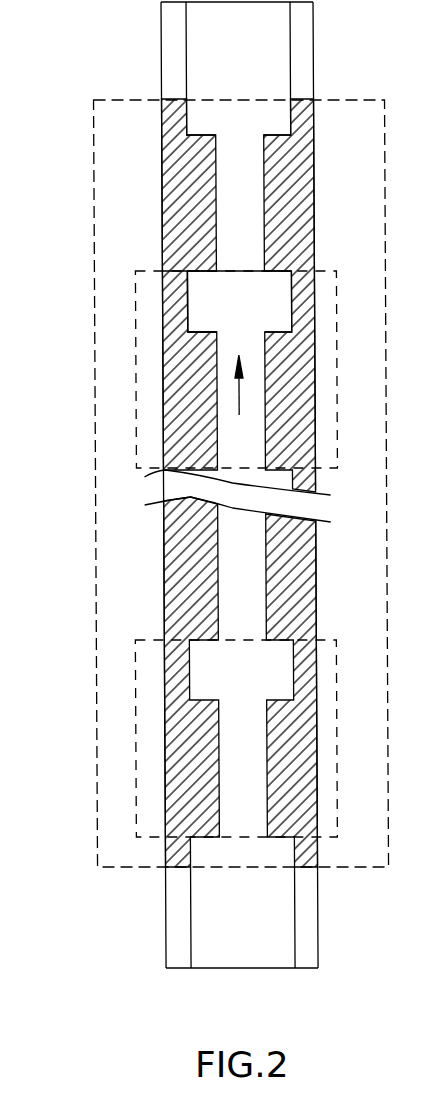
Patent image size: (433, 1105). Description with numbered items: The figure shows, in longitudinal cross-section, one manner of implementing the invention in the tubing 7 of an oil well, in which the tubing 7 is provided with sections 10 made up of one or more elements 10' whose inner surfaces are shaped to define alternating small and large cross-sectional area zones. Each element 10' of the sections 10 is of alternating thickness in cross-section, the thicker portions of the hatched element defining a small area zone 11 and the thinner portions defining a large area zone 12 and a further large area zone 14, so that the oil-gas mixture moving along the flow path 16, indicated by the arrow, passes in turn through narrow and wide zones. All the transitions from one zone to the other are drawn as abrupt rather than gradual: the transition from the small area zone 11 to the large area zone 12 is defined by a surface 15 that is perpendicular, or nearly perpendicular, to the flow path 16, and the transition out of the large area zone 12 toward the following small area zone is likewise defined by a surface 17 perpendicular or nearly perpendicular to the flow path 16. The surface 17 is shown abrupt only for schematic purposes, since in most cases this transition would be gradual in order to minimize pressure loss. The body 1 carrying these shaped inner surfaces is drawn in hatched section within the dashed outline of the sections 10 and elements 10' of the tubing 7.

The valve body 1 is at (238, 188).
The tubing 7 is at (161, 43).
The section 10 is at (213, 483).
The element 10' is at (184, 521).
The small area zone 11 is at (238, 445).
The large area zone 12 is at (203, 311).
The large area zone 14 is at (213, 116).
The surface 15 is at (197, 331).
The flow path 16 is at (237, 389).
The surface 17 is at (178, 292).